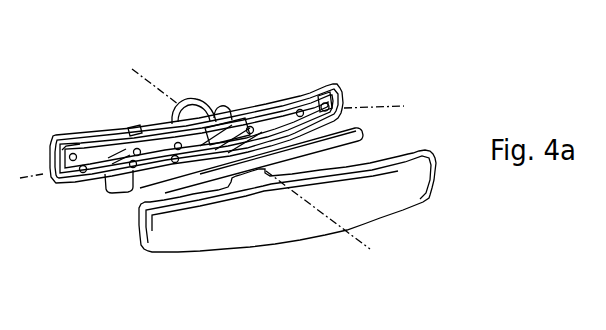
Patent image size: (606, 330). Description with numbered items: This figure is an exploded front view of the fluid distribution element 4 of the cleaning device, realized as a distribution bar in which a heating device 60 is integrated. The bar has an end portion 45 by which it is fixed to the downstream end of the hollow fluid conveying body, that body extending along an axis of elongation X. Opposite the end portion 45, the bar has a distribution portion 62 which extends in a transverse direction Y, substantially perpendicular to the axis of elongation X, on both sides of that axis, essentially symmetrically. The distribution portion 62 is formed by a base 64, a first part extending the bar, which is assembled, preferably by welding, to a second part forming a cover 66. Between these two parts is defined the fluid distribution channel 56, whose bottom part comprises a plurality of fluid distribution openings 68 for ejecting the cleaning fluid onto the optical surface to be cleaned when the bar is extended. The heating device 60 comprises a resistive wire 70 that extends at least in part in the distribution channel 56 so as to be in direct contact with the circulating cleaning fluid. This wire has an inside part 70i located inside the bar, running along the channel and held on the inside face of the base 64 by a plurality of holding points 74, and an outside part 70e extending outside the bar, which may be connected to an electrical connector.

The fluid distribution element 4 is at (285, 70).
The end portion 45 is at (195, 95).
The fluid distribution channel 56 is at (344, 107).
The heating device 60 is at (301, 157).
The distribution portion 62 is at (190, 188).
The base 64 is at (71, 198).
The cover 66 is at (287, 238).
The fluid distribution openings 68 is at (132, 194).
The resistive wire 70 is at (371, 141).
The outside part of the heating device 70e is at (105, 137).
The inside part of the heating device 70i is at (227, 192).
The holding points 74 is at (134, 130).
The axis of elongation X is at (248, 149).
The transverse direction Y is at (219, 136).